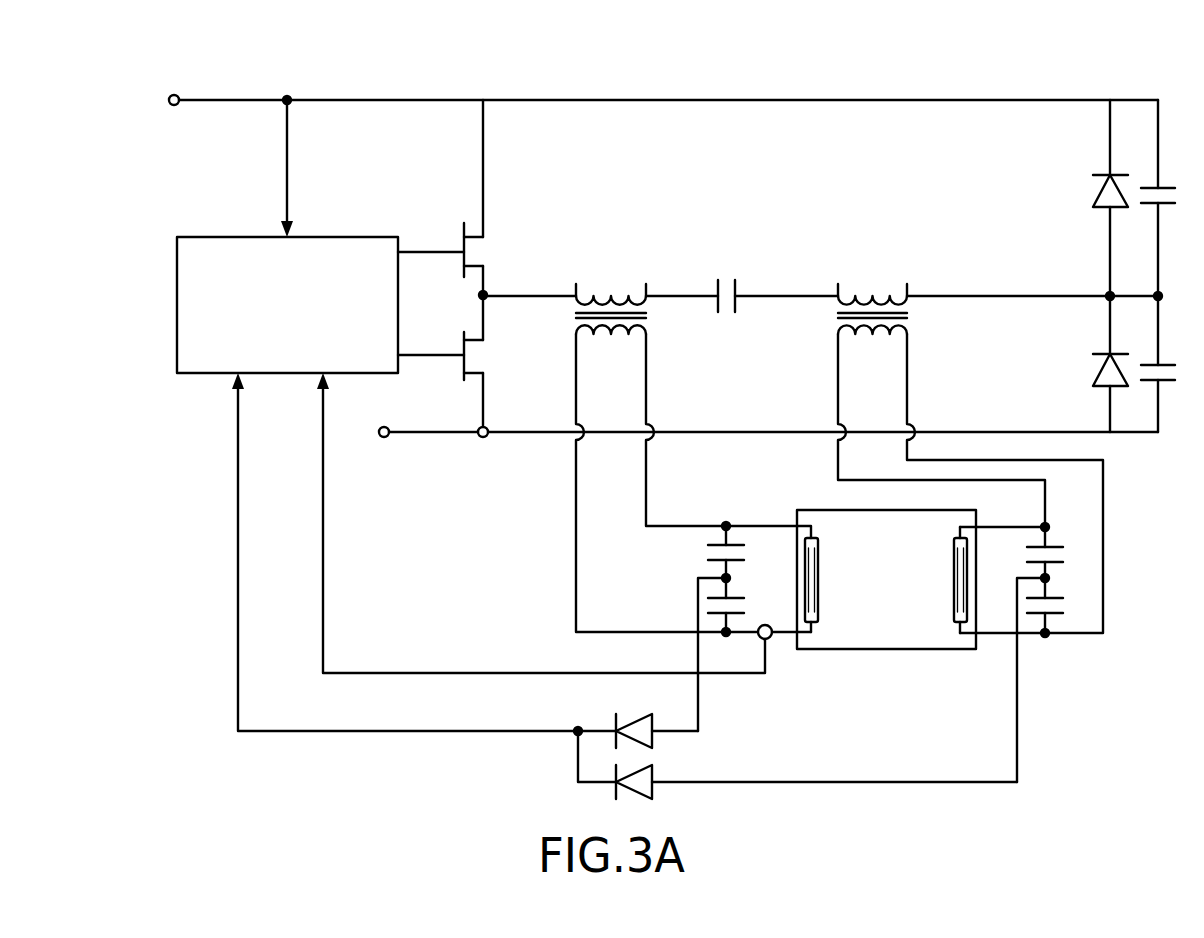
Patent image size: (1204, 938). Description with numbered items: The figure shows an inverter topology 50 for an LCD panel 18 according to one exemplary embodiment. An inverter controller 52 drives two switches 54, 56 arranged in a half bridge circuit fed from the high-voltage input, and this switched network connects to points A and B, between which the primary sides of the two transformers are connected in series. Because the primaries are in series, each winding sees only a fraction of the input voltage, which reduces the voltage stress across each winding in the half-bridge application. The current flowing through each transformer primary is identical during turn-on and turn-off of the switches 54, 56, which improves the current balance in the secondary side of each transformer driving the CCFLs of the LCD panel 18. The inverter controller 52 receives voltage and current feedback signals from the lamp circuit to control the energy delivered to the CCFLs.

The inverter topology 50 is at (508, 66).
The inverter controller 52 is at (344, 237).
The switch 54 is at (478, 251).
The switch 56 is at (478, 363).
The LCD panel 18 is at (822, 508).